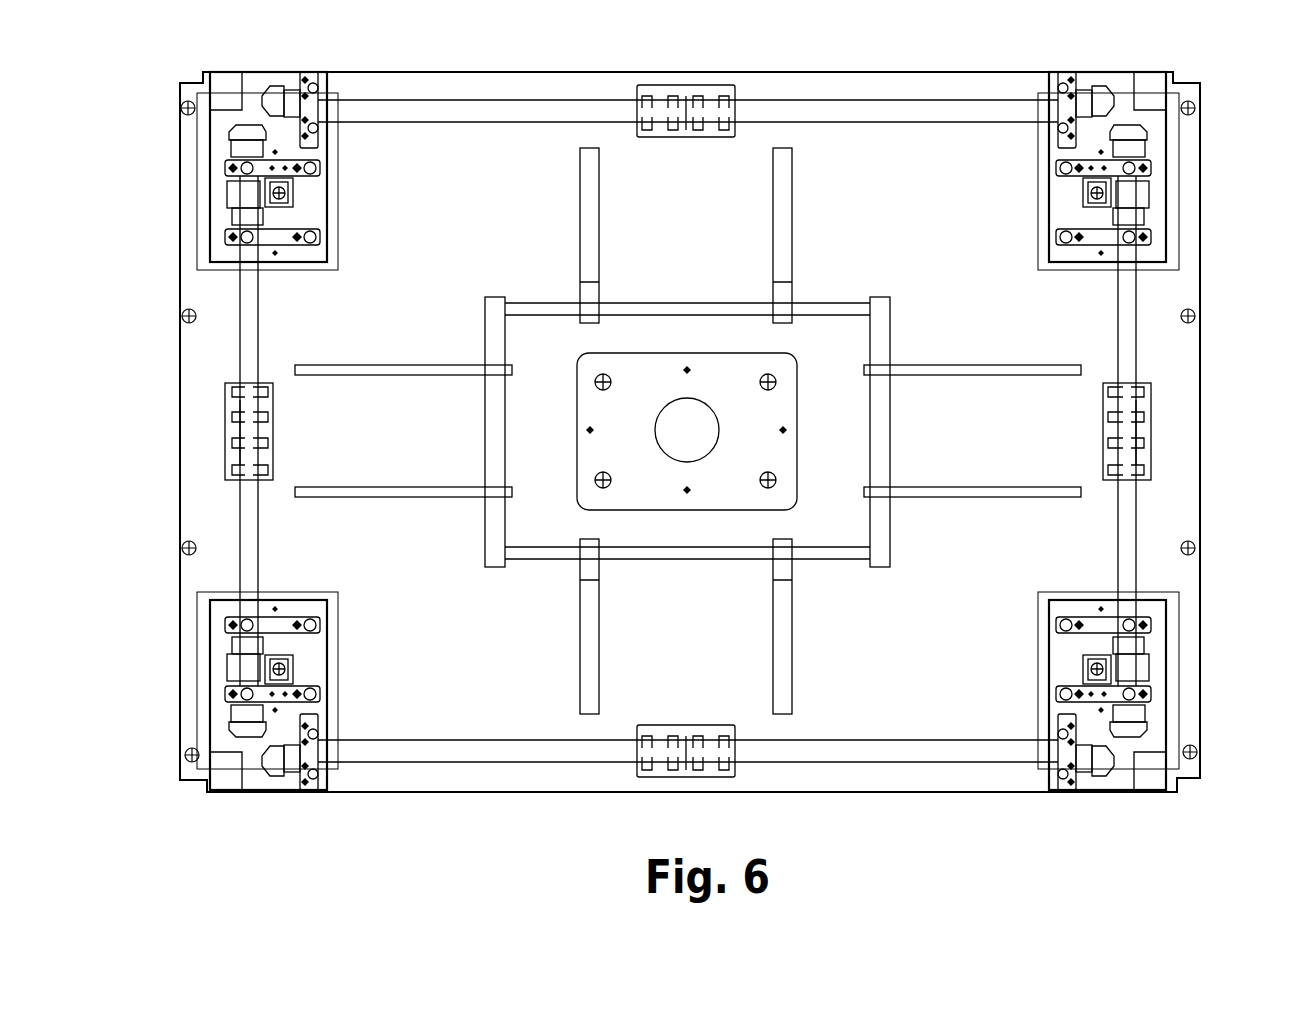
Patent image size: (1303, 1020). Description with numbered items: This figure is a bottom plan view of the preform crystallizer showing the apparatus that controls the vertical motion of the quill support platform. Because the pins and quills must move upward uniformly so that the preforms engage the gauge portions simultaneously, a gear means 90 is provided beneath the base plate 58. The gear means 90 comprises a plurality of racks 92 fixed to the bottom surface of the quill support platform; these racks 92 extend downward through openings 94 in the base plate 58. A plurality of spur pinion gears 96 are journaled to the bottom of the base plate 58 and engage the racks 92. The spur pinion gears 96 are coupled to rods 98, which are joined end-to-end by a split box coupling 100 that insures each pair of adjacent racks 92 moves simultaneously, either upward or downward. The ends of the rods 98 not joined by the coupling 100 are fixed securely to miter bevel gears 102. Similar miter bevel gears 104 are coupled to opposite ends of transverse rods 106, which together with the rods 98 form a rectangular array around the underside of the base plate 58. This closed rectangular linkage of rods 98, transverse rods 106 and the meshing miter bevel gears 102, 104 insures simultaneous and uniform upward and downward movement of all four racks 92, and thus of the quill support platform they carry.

The base plate 58 is at (500, 625).
The gear means 90 is at (205, 350).
The rack 92 is at (287, 202).
The opening 94 is at (293, 183).
The spur pinion gear 96 is at (242, 196).
The rod 98 is at (258, 328).
The split box coupling 100 is at (228, 432).
The miter bevel gear 102 is at (232, 130).
The miter bevel gear 104 is at (270, 95).
The transverse rod 106 is at (400, 118).